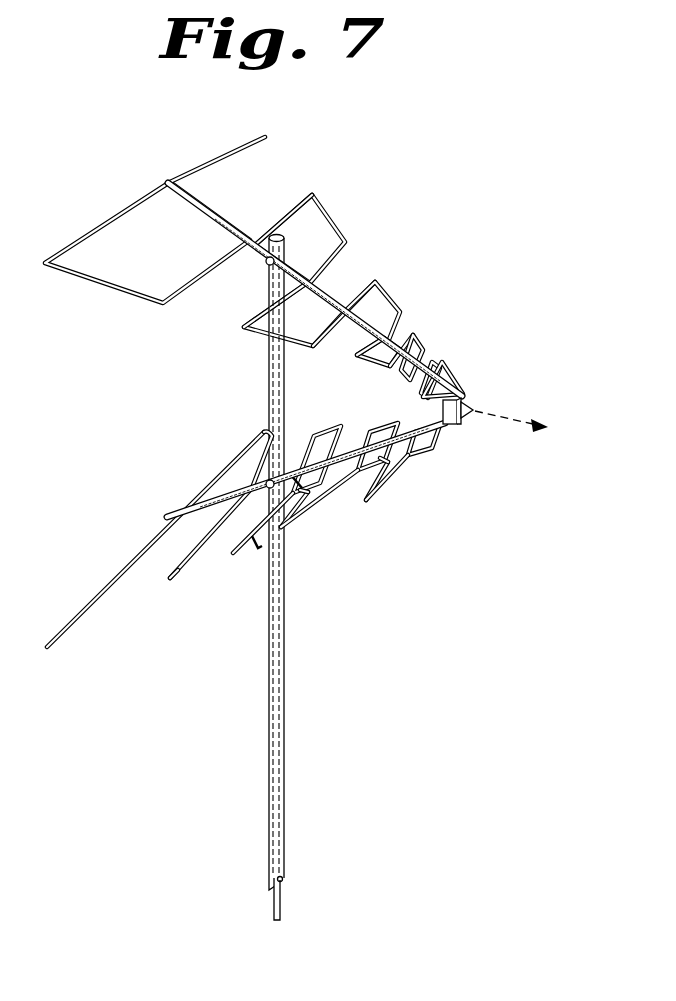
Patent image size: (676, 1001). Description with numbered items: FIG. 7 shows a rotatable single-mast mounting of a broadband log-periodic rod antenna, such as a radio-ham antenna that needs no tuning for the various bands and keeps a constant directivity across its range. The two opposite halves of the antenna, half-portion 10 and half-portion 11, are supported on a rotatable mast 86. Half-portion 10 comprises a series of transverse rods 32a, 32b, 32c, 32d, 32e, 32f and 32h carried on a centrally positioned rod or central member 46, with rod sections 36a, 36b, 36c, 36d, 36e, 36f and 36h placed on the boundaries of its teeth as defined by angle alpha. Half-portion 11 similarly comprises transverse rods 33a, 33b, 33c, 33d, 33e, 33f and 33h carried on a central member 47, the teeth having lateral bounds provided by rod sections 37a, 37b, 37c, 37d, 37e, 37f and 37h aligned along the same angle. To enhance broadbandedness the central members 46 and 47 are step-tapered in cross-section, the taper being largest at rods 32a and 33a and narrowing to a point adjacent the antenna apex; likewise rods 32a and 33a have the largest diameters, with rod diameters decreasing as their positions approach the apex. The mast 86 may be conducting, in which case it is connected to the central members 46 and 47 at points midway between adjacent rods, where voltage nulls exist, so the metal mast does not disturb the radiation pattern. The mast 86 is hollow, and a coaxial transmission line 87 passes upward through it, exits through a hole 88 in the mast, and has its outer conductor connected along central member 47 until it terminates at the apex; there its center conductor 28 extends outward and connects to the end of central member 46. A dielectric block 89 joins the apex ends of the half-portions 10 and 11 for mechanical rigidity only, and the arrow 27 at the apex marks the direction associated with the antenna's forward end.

The half-portion 10 is at (112, 197).
The half-portion 11 is at (116, 529).
The direction of maximum radiation 27 is at (535, 431).
The inner conductor 28 is at (474, 411).
The transverse rod 32a is at (228, 158).
The transverse rod 32b is at (298, 207).
The transverse rod 32c is at (257, 308).
The transverse rod 32d is at (372, 282).
The transverse rod 32e is at (359, 346).
The transverse rod 32f is at (412, 335).
The transverse rod 32h is at (420, 389).
The rod section 36a is at (133, 294).
The rod section 36b is at (327, 213).
The rod section 36c is at (272, 345).
The rod section 36d is at (386, 292).
The rod section 36e is at (362, 366).
The rod section 36f is at (424, 343).
The rod section 36h is at (440, 404).
The transverse rod 33a is at (218, 465).
The transverse rod 33b is at (156, 581).
The transverse rod 33c is at (250, 553).
The transverse rod 33d is at (296, 521).
The transverse rod 33e is at (360, 480).
The transverse rod 33f is at (373, 468).
The transverse rod 33h is at (425, 448).
The rod section 37a is at (259, 429).
The rod section 37b is at (188, 594).
The rod section 37c is at (346, 427).
The rod section 37d is at (306, 504).
The rod section 37e is at (399, 426).
The rod section 37f is at (397, 462).
The rod section 37h is at (445, 442).
The central member 46 is at (216, 224).
The central member 47 is at (210, 515).
The rotatable mast 86 is at (285, 687).
The coaxial transmission line 87 is at (299, 478).
The hole 88 is at (255, 538).
The dielectric block 89 is at (450, 424).